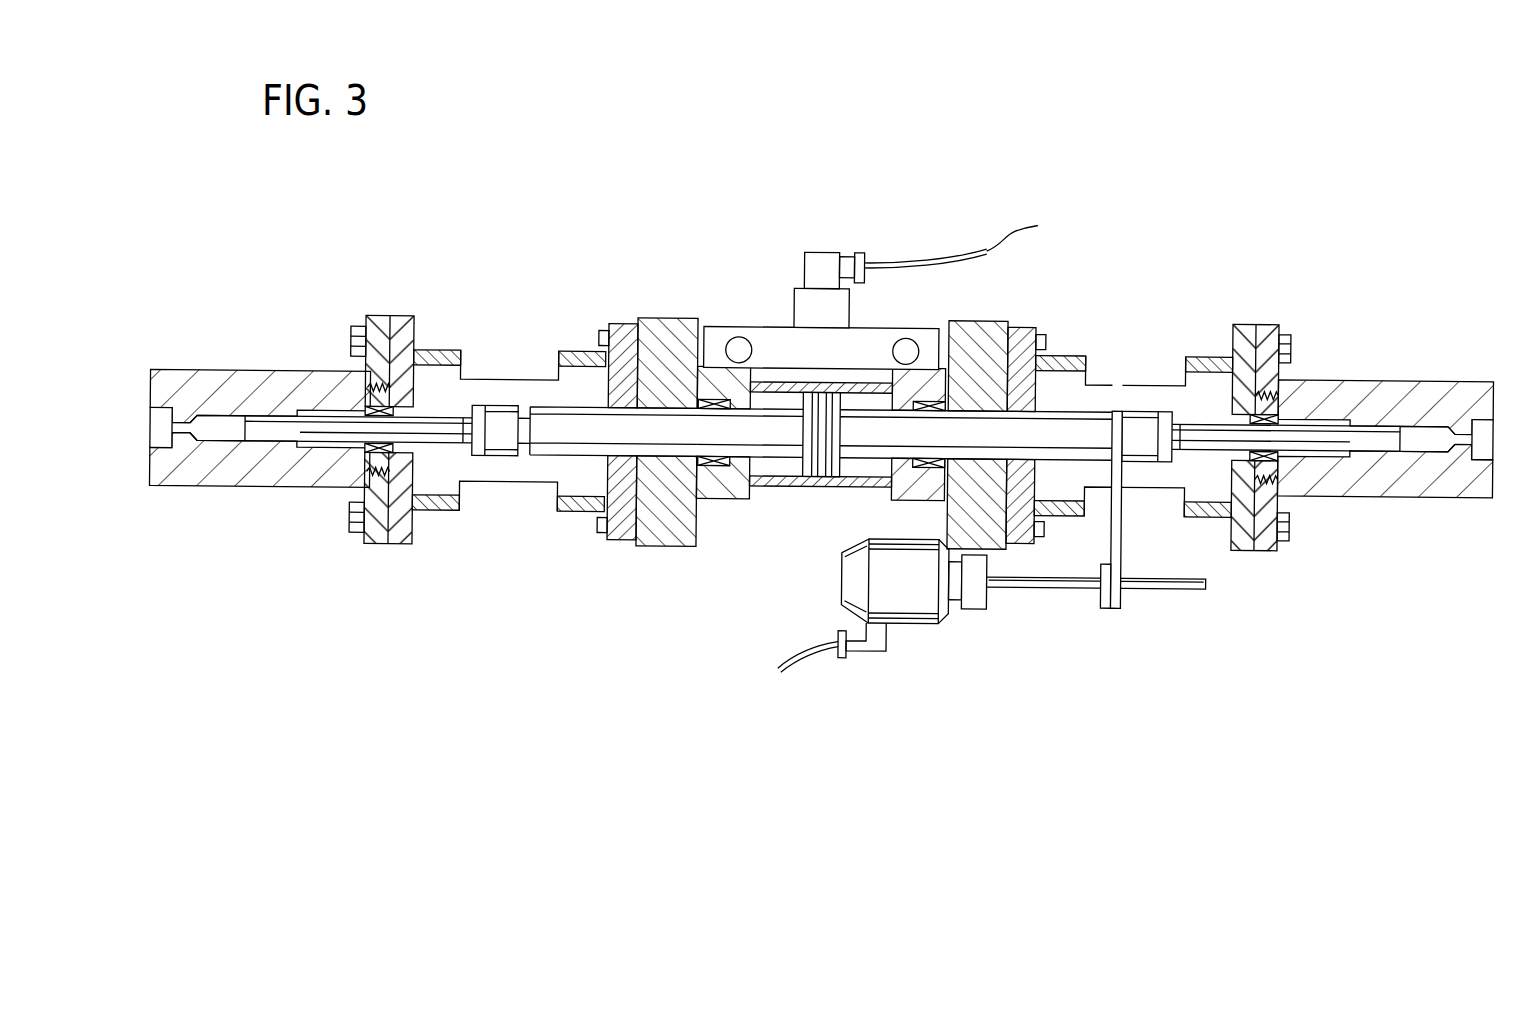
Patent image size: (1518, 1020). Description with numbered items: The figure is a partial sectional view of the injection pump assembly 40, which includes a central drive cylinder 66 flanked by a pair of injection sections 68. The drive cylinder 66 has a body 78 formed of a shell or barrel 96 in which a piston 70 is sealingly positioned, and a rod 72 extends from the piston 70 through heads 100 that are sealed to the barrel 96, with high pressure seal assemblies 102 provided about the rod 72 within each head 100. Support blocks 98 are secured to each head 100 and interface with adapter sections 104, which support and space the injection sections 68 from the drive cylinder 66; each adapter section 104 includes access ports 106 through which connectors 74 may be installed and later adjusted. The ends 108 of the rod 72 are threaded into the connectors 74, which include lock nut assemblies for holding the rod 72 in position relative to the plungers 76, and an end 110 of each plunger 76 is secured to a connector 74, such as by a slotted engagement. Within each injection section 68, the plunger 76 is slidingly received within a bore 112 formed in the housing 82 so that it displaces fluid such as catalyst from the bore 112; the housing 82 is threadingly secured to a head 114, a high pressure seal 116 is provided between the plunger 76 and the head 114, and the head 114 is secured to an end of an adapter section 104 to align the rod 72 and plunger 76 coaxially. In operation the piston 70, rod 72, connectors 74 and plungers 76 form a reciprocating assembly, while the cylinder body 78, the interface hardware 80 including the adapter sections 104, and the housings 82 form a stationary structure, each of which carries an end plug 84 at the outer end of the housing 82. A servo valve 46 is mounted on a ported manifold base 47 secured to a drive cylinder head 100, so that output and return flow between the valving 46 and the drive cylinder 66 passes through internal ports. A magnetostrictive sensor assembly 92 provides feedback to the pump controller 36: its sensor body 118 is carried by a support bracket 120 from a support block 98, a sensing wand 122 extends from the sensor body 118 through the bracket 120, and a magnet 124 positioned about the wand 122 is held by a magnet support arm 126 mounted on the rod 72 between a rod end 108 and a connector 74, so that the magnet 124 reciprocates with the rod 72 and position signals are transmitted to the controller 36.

The pump controller 36 is at (718, 710).
The injection pump assembly 40 is at (698, 249).
The servo valve 46 is at (795, 296).
The ported manifold base 47 is at (742, 322).
The drive cylinder 66 is at (756, 524).
The injection section 68 is at (301, 532).
The piston 70 is at (822, 477).
The rod 72 is at (605, 432).
The connector 74 is at (502, 442).
The plunger 76 is at (315, 424).
The drive cylinder body 78 is at (775, 488).
The interface hardware 80 is at (644, 298).
The injection section housing 82 is at (288, 495).
The end plug 84 is at (185, 442).
The sensor assembly 92 is at (1076, 598).
The barrel 96 is at (838, 391).
The support block 98 is at (675, 542).
The head 100 is at (723, 495).
The high pressure seal assembly 102 is at (645, 547).
The adapter section 104 is at (426, 356).
The access port 106 is at (462, 521).
The rod end 108 is at (562, 422).
The plunger end 110 is at (467, 422).
The bore 112 is at (215, 425).
The head 114 is at (372, 337).
The high pressure seal 116 is at (370, 411).
The sensor body 118 is at (917, 590).
The support bracket 120 is at (978, 596).
The sensing wand 122 is at (1208, 576).
The magnet 124 is at (1106, 565).
The magnet support arm 126 is at (1124, 544).